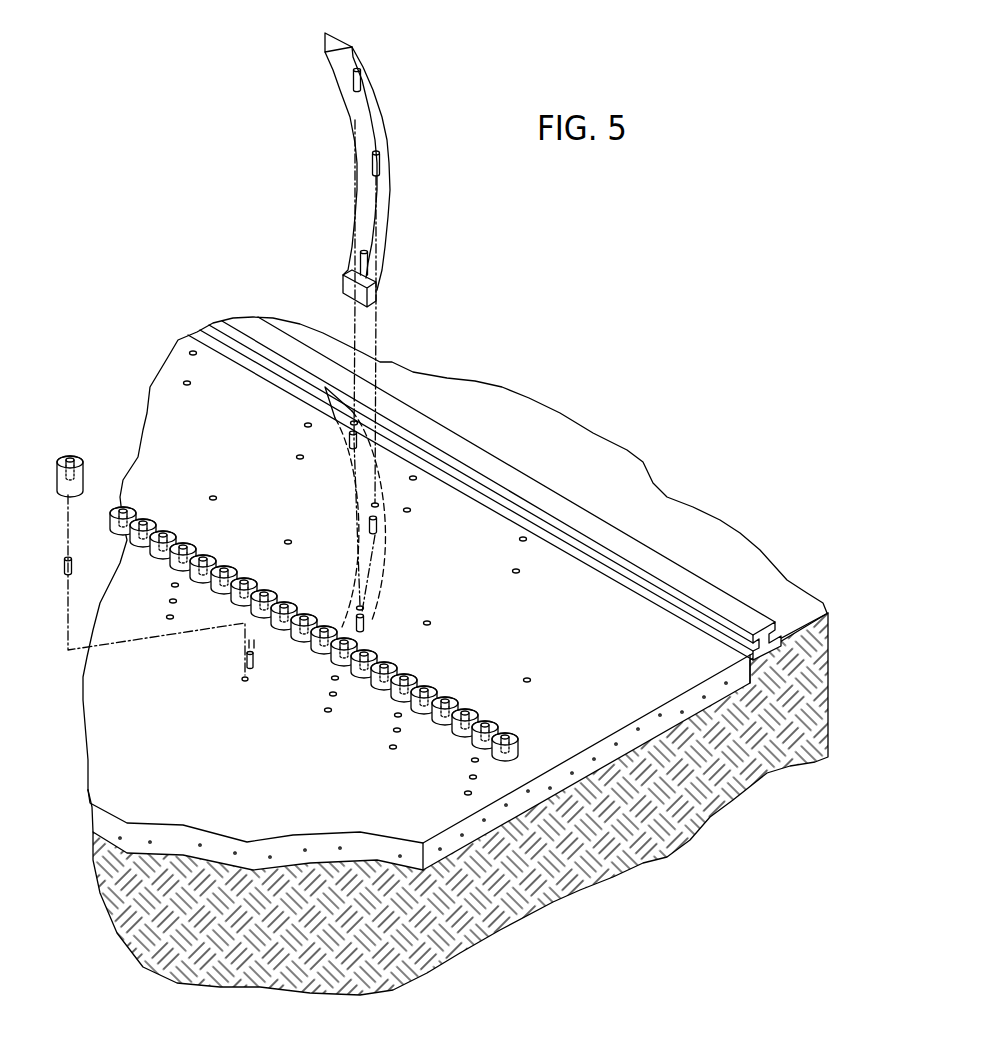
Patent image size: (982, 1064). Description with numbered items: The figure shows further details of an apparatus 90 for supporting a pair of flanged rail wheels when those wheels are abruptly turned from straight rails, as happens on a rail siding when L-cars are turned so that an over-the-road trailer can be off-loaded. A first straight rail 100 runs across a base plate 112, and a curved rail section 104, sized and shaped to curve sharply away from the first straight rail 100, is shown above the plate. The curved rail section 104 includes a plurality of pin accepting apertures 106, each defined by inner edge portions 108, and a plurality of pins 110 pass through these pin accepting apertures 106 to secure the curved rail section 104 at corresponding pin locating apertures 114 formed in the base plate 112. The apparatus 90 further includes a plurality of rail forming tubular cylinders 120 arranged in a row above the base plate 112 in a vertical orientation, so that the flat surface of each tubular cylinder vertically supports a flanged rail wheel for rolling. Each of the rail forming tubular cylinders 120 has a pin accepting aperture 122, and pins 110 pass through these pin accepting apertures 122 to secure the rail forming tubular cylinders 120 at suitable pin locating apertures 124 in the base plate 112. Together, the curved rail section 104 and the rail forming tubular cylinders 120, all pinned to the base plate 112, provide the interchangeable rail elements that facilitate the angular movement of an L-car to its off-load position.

The apparatus 90 is at (239, 180).
The first straight rail 100 is at (712, 587).
The curved rail section 104 is at (391, 188).
The pin accepting apertures 106 is at (377, 151).
The inner edge portions 108 is at (383, 167).
The pins 110 is at (77, 567).
The base plate 112 is at (640, 617).
The pin locating apertures 114 is at (189, 385).
The rail forming tubular cylinders 120 is at (86, 480).
The pin accepting apertures 122 is at (82, 461).
The pin locating apertures 124 is at (177, 604).